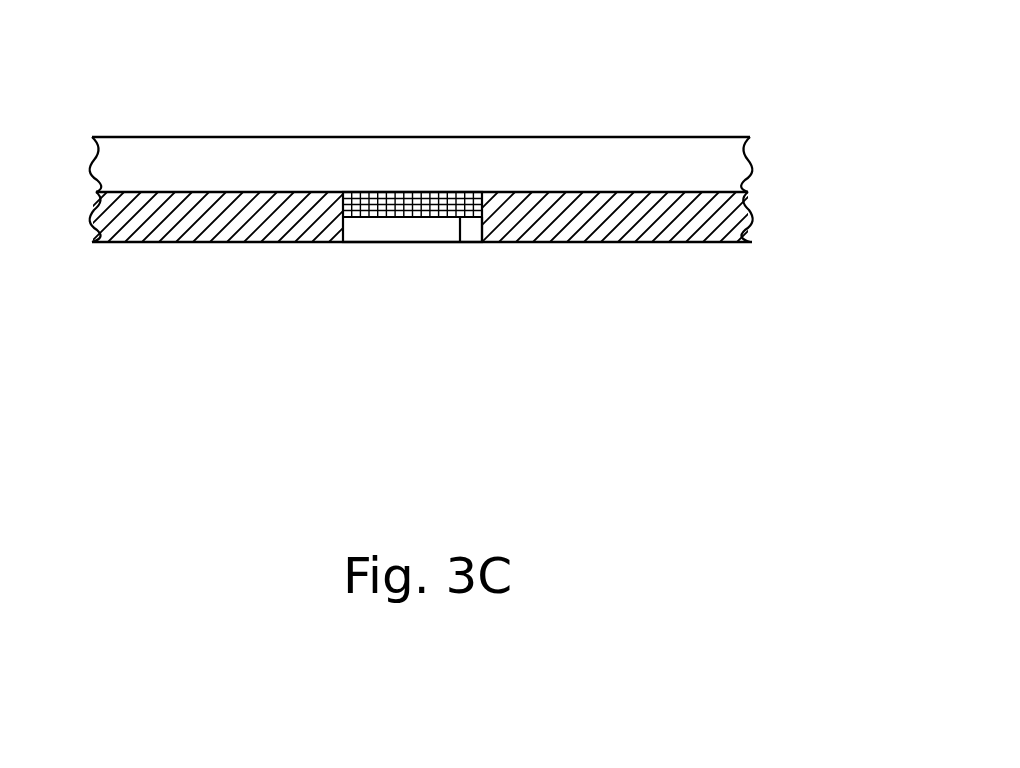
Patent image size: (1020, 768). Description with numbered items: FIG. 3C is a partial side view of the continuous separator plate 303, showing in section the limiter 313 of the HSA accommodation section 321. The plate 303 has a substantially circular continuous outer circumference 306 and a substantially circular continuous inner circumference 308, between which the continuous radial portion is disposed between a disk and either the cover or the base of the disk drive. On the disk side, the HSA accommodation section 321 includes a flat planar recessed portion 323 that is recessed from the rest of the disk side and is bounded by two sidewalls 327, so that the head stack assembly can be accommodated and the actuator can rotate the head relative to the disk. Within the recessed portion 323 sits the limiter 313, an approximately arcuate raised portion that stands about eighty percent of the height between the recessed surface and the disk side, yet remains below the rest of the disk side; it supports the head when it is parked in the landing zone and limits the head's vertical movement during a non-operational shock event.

The continuous separator plate 303 is at (484, 124).
The substantially circular continuous outer circumference 306 is at (711, 141).
The HSA accommodation section 321 is at (171, 224).
The recessed portion 323 is at (655, 194).
The sidewalls 327 is at (273, 236).
The substantially circular continuous inner circumference 308 is at (378, 228).
The limiter 313 is at (463, 226).